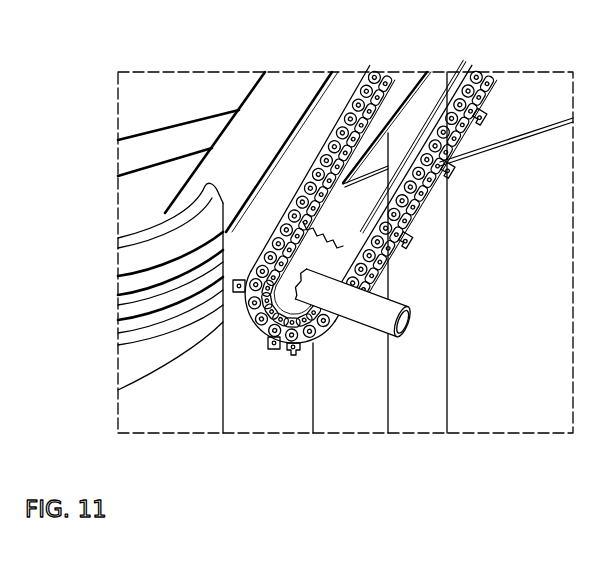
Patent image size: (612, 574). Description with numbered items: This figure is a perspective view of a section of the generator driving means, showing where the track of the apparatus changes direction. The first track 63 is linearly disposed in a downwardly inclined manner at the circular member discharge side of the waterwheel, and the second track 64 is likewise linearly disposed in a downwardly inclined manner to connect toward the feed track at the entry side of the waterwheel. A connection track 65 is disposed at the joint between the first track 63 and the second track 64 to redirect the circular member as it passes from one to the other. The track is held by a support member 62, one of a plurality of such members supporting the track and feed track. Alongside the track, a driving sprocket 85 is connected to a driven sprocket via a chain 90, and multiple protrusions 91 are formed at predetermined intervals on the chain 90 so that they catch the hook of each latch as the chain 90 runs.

The support member 62 is at (428, 293).
The first track 63 is at (290, 85).
The second track 64 is at (166, 148).
The connection track 65 is at (128, 312).
The driving sprocket 85 is at (308, 317).
The chain 90 is at (420, 209).
The protrusion 91 is at (450, 173).